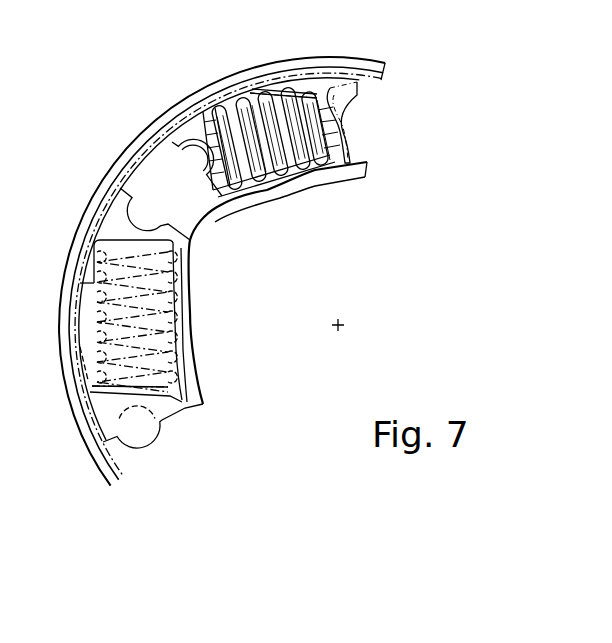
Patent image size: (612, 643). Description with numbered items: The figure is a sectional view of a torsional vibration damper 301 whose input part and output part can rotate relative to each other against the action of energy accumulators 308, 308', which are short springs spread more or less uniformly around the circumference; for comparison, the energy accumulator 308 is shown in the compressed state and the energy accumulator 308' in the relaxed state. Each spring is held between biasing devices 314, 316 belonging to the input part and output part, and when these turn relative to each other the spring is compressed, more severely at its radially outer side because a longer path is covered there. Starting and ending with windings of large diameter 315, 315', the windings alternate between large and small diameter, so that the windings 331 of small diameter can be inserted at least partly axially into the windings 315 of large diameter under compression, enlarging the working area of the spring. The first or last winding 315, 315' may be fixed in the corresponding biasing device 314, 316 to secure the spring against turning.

The torsional vibration damper 301 is at (370, 225).
The energy accumulator 308 is at (283, 172).
The energy accumulator 308' is at (174, 321).
The biasing device 314 is at (352, 98).
The winding of large diameter 315 is at (282, 97).
The winding of large diameter 315' is at (205, 111).
The biasing device 316 is at (223, 195).
The winding of small diameter 331 is at (262, 152).